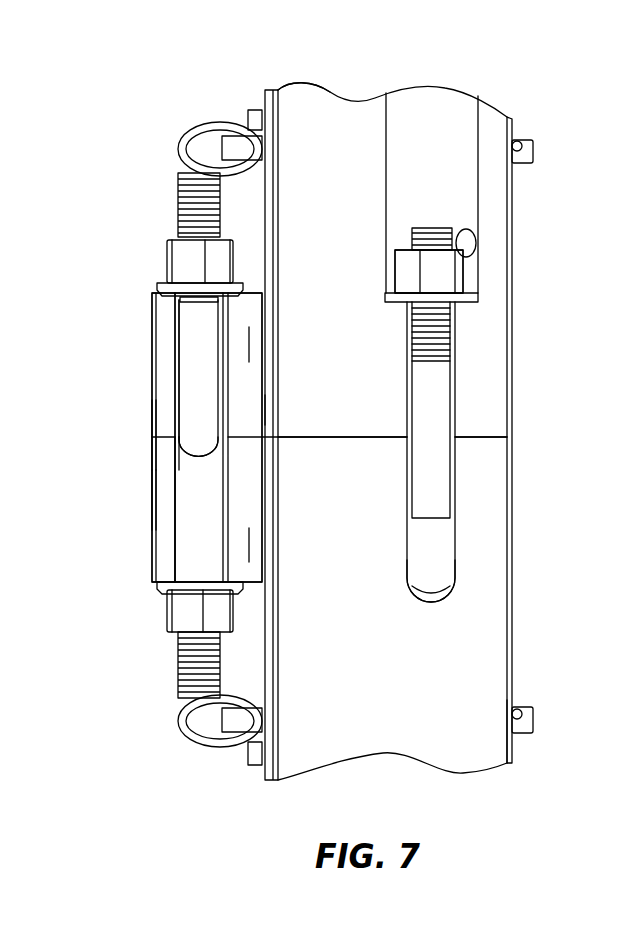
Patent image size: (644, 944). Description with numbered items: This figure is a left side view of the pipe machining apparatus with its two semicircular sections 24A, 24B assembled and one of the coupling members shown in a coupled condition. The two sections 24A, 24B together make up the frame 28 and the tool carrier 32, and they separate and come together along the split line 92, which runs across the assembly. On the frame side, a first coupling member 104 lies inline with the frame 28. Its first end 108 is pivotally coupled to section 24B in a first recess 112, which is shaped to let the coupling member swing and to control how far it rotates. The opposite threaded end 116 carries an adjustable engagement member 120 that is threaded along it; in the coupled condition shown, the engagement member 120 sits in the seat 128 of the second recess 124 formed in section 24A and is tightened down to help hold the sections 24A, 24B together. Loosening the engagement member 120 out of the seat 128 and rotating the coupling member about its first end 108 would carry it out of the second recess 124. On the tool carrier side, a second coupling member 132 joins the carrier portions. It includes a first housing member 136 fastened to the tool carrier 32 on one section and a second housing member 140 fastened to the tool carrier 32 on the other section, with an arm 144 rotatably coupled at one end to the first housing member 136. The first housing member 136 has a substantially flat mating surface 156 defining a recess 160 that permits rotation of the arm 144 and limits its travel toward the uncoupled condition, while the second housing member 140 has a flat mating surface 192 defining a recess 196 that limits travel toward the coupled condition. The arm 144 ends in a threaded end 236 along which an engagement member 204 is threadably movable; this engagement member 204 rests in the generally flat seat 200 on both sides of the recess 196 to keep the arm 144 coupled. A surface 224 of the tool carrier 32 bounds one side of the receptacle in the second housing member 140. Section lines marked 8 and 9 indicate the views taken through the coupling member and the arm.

The semicircular section 24A is at (356, 74).
The semicircular section 24B is at (522, 622).
The frame 28 is at (357, 364).
The tool carrier 32 is at (268, 210).
The second recess 124 is at (478, 140).
The first coupling member 104 is at (465, 210).
The engagement member 120 is at (440, 270).
The seat 128 is at (398, 292).
The threaded end 116 is at (437, 343).
The first recess 112 is at (414, 488).
The first end 108 is at (465, 555).
The split line 92 is at (490, 440).
The surface 224 is at (266, 418).
The eyelet 9 is at (200, 145).
The threaded end 236 is at (184, 198).
The engagement member 204 is at (190, 262).
The seat 200 is at (170, 288).
The second housing member 140 is at (155, 312).
The second coupling member 132 is at (125, 574).
The recess 196 is at (192, 363).
The arm 144 is at (168, 388).
The mating surface 156 is at (152, 428).
The mating surface 192 is at (178, 442).
The first housing member 136 is at (155, 487).
The recess 160 is at (178, 450).
The section line 8 is at (236, 344).